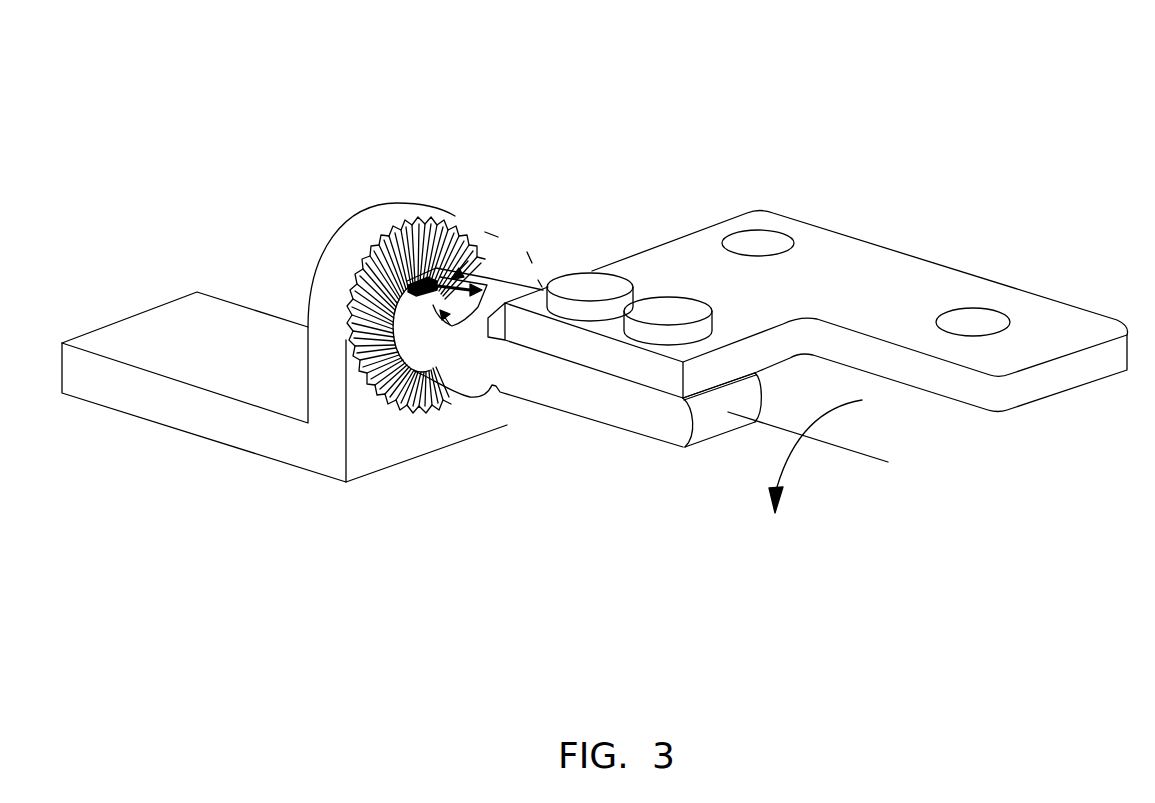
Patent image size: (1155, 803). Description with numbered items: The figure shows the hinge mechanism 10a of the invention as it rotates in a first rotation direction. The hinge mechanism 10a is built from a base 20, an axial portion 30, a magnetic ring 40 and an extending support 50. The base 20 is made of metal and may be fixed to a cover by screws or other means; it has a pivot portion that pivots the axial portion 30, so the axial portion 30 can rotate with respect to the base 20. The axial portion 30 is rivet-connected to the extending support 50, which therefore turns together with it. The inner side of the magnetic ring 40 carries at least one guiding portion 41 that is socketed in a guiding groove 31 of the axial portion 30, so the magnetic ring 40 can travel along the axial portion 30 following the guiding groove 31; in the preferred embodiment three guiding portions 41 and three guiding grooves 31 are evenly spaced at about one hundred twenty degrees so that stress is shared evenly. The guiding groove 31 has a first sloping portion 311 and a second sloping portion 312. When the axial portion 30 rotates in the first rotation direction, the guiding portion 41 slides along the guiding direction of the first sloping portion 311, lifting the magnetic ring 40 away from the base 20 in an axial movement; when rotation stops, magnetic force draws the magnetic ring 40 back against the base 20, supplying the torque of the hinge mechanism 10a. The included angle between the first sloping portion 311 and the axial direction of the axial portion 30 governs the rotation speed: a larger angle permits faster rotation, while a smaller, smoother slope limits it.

The hinge mechanism 10a is at (160, 132).
The base 20 is at (402, 206).
The axial portion 30 is at (668, 435).
The guiding groove 31 is at (588, 200).
The first sloping portion 311 is at (465, 262).
The second sloping portion 312 is at (492, 303).
The magnetic ring 40 is at (480, 413).
The guiding portion 41 is at (412, 290).
The extending support 50 is at (880, 252).